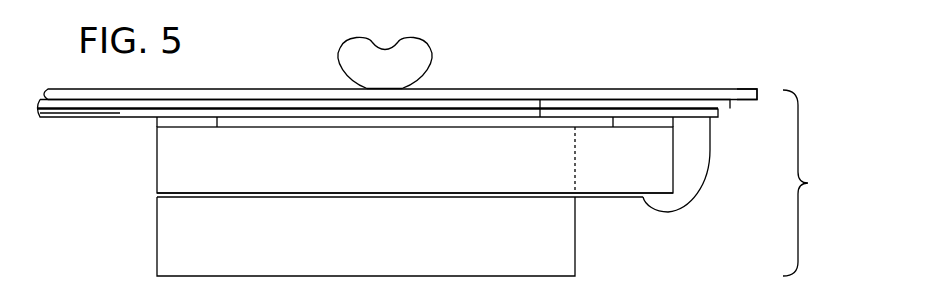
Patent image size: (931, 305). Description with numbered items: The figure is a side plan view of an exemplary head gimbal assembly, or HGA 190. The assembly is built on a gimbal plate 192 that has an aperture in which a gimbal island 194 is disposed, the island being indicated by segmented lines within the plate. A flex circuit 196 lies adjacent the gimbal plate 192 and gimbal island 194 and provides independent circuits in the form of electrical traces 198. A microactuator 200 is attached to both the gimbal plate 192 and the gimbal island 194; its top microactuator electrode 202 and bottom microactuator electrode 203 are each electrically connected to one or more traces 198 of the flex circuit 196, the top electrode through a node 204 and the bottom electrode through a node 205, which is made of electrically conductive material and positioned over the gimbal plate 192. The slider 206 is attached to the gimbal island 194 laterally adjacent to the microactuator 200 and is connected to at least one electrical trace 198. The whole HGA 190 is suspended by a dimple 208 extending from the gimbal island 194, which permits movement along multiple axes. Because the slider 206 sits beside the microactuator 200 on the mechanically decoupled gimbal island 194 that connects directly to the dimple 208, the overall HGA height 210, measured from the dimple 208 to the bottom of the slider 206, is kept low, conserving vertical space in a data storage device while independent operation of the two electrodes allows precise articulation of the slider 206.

The head gimbal assembly 190 is at (724, 62).
The gimbal plate 192 is at (738, 98).
The gimbal island 194 is at (573, 97).
The flex circuit 196 is at (727, 106).
The electrical traces 198 is at (76, 114).
The microactuator 200 is at (156, 174).
The top microactuator electrode 202 is at (540, 120).
The bottom microactuator electrode 203 is at (593, 199).
The node 204 is at (156, 121).
The node 205 is at (691, 200).
The slider 206 is at (156, 237).
The dimple 208 is at (436, 74).
The HGA height 210 is at (818, 183).